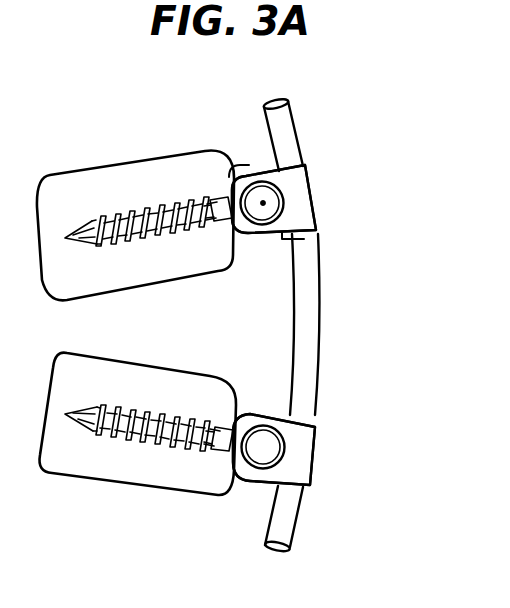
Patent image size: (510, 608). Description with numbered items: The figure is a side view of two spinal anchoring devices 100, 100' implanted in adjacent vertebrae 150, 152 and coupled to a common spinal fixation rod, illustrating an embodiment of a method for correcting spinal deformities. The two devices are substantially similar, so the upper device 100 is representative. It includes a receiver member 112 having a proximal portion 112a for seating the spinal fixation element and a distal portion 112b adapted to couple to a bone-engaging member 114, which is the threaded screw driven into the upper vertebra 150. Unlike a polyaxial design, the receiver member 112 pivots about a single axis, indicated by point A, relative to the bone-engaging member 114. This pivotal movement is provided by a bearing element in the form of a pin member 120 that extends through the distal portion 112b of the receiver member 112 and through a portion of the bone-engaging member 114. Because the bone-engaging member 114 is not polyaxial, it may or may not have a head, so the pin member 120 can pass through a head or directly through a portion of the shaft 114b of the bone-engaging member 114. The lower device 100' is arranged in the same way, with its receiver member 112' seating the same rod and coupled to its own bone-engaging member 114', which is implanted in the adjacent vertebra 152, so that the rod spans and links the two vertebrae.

The spinal anchoring device 100 is at (334, 179).
The spinal anchoring device 100' is at (336, 466).
The receiver member 112 is at (299, 166).
The receiver member 112' is at (321, 432).
The proximal portion 112a is at (304, 239).
The distal portion 112b is at (251, 164).
The bone-engaging member 114 is at (148, 175).
The bone-engaging member 114' is at (135, 470).
The shaft 114b is at (147, 240).
The pin member 120 is at (263, 203).
The vertebra 150 is at (108, 292).
The vertebra 152 is at (104, 397).
The pivot axis point A is at (264, 206).